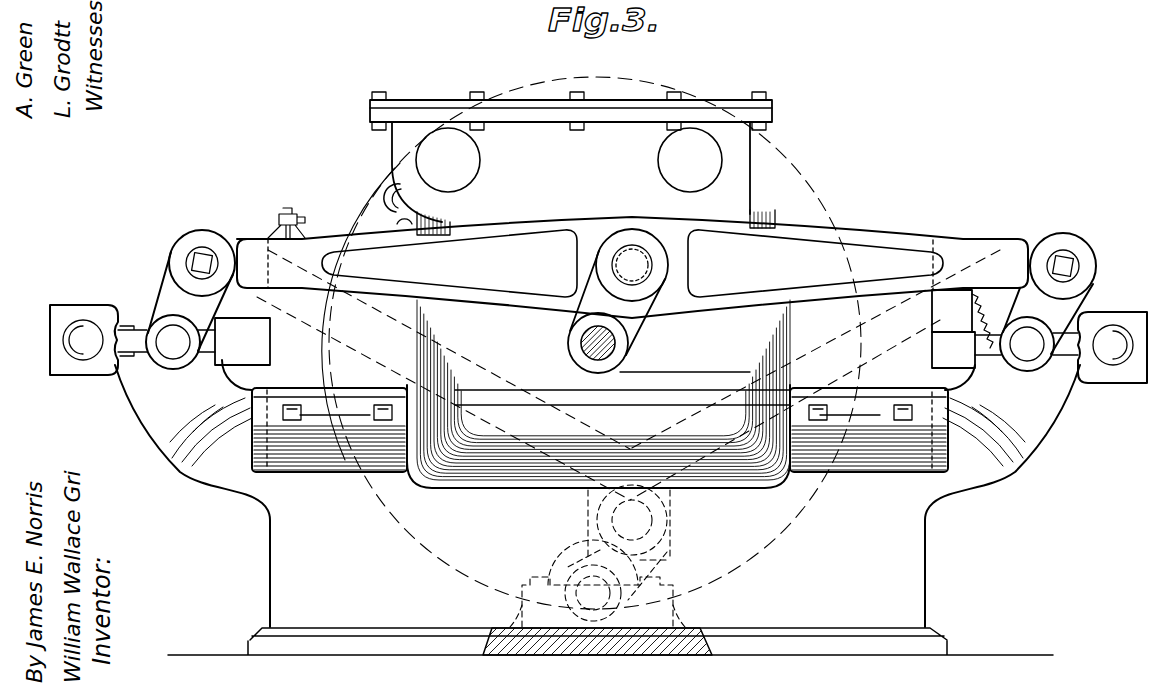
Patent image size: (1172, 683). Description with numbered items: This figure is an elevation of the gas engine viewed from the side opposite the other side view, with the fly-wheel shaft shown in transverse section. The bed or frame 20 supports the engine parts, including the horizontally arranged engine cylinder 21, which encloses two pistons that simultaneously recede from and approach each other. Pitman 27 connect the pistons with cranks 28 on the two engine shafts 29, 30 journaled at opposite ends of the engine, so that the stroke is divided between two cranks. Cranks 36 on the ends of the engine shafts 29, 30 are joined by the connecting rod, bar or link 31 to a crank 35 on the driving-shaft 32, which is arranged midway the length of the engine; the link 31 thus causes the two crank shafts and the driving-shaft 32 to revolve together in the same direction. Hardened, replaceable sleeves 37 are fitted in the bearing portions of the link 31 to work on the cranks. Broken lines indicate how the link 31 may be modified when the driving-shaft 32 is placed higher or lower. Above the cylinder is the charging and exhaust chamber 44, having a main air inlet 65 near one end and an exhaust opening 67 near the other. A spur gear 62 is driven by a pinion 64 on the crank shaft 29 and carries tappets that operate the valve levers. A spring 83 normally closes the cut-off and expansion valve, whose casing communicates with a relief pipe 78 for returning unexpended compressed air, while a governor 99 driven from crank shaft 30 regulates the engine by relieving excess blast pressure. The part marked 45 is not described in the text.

The bed or frame 20 is at (597, 507).
The engine cylinder 21 is at (600, 394).
The pitman 27 is at (1106, 307).
The cranks 28 is at (598, 344).
The engine crank shaft 29 is at (1027, 344).
The engine crank shaft 30 is at (173, 342).
The connecting rod, bar or link 31 is at (632, 267).
The driving-shaft 32 is at (612, 347).
The crank 35 is at (617, 303).
The cranks 36 is at (191, 290).
The hardened sleeves 37 is at (622, 253).
The charging and exhaust chamber 44 is at (583, 179).
The cross bar 45 is at (712, 110).
The spur gear 62 is at (962, 319).
The pinion 64 is at (1049, 293).
The main air inlet 65 is at (448, 160).
The exhaust opening 67 is at (690, 160).
The relief pipe 78 is at (398, 226).
The spring 83 is at (394, 194).
The governor 99 is at (280, 213).